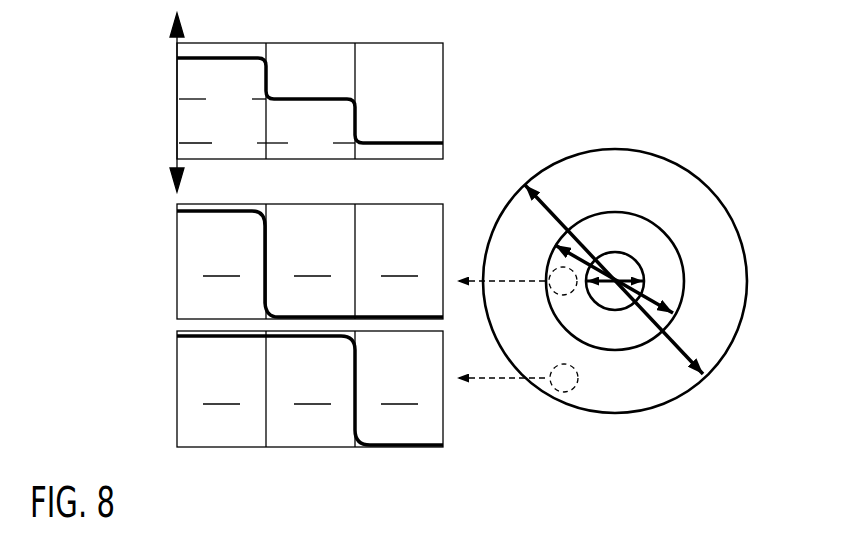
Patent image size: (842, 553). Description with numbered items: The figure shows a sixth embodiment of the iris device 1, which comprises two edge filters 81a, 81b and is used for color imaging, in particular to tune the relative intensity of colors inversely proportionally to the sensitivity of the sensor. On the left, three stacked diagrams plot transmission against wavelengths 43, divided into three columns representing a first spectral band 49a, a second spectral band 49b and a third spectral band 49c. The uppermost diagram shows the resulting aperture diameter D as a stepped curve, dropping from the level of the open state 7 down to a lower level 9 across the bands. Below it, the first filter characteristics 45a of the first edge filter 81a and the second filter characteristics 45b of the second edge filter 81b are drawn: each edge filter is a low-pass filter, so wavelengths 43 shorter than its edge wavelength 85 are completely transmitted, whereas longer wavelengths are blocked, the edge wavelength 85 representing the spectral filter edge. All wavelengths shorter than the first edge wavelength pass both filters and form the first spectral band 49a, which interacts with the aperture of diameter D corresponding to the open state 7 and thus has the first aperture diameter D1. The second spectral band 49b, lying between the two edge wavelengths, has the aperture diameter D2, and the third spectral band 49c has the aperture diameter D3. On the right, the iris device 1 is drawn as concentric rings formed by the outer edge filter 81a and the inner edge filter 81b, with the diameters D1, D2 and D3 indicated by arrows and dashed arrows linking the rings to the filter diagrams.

The open state 7 is at (177, 58).
The aperture diameter D is at (177, 99).
The second end / lower signal level 9 is at (177, 143).
The first filter characteristics 45a is at (200, 211).
The second filter characteristics 45b is at (203, 336).
The first spectral band 49a is at (222, 326).
The second spectral band 49b is at (313, 326).
The third spectral band 49c is at (400, 326).
The edge wavelength 85 is at (267, 448).
The wavelengths 43 is at (312, 448).
The iris device 1 is at (732, 208).
The first edge filter 81a is at (683, 188).
The second edge filter 81b is at (627, 337).
The first aperture diameter D1 is at (555, 217).
The second aperture diameter D2 is at (593, 252).
The third aperture diameter D3 is at (603, 287).